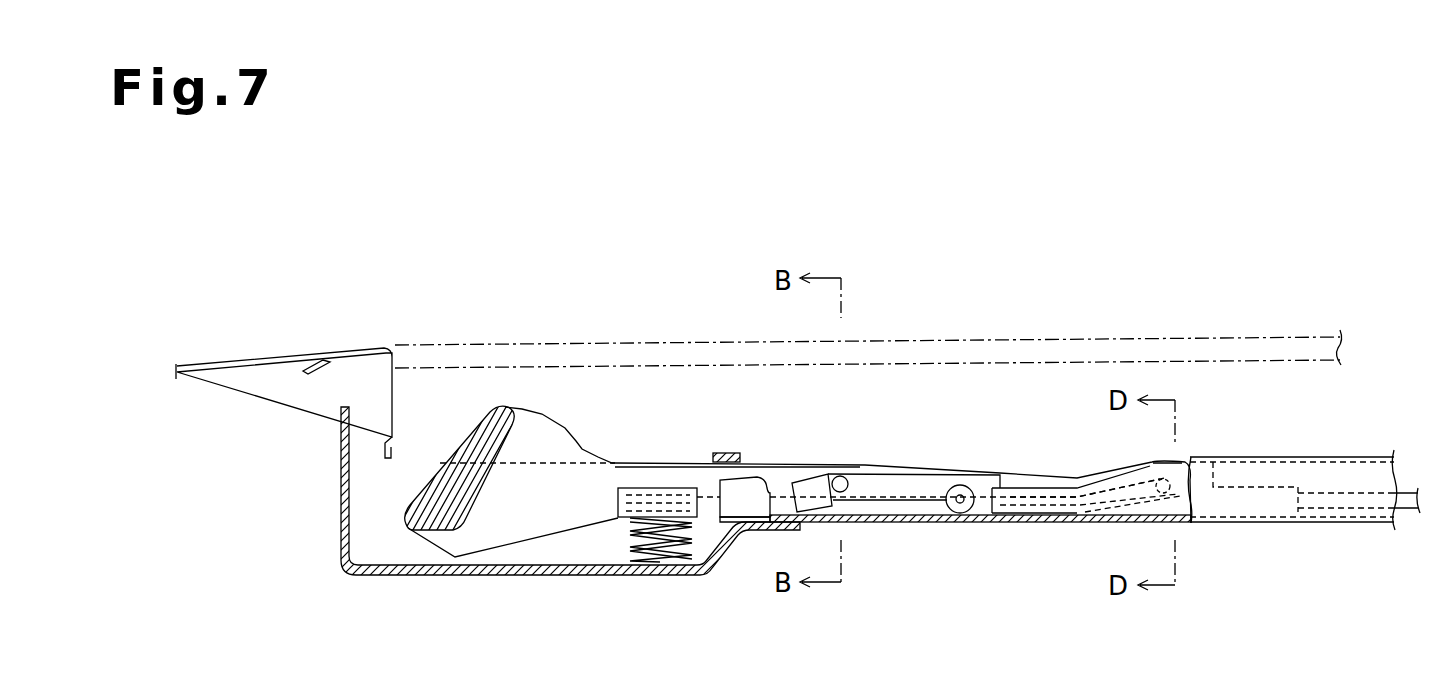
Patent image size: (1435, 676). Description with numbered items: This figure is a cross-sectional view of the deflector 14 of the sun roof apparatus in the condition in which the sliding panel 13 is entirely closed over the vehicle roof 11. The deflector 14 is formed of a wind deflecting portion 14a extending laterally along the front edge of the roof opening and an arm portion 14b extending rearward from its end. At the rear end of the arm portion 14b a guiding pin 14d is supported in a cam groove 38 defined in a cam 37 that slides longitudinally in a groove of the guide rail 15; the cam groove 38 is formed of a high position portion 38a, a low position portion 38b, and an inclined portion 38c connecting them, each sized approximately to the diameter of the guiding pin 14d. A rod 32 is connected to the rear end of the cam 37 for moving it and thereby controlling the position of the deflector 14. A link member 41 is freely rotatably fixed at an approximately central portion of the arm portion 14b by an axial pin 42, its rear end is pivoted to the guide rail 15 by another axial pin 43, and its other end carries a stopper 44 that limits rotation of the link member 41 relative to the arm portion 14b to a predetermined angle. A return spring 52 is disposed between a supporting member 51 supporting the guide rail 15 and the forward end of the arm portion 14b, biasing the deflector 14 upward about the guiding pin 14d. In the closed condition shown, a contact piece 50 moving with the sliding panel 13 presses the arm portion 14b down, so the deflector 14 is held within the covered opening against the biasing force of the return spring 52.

The vehicle roof 11 is at (272, 358).
The sliding panel 13 is at (1273, 336).
The deflector 14 is at (543, 397).
The wind deflecting portion 14a is at (471, 434).
The arm portion 14b is at (660, 464).
The guiding pin 14d is at (1186, 440).
The guide rail 15 is at (928, 522).
The rod 32 is at (1345, 522).
The cam 37 is at (1242, 522).
The cam groove 38 is at (1120, 486).
The high position portion 38a is at (1203, 455).
The low position portion 38b is at (1058, 492).
The inclined portion 38c is at (1096, 520).
The link member 41 is at (862, 483).
The axial pin 42 is at (836, 492).
The axial pin 43 is at (957, 485).
The stopper 44 is at (812, 486).
The contact piece 50 is at (726, 453).
The supporting member 51 is at (462, 575).
The return spring 52 is at (628, 535).